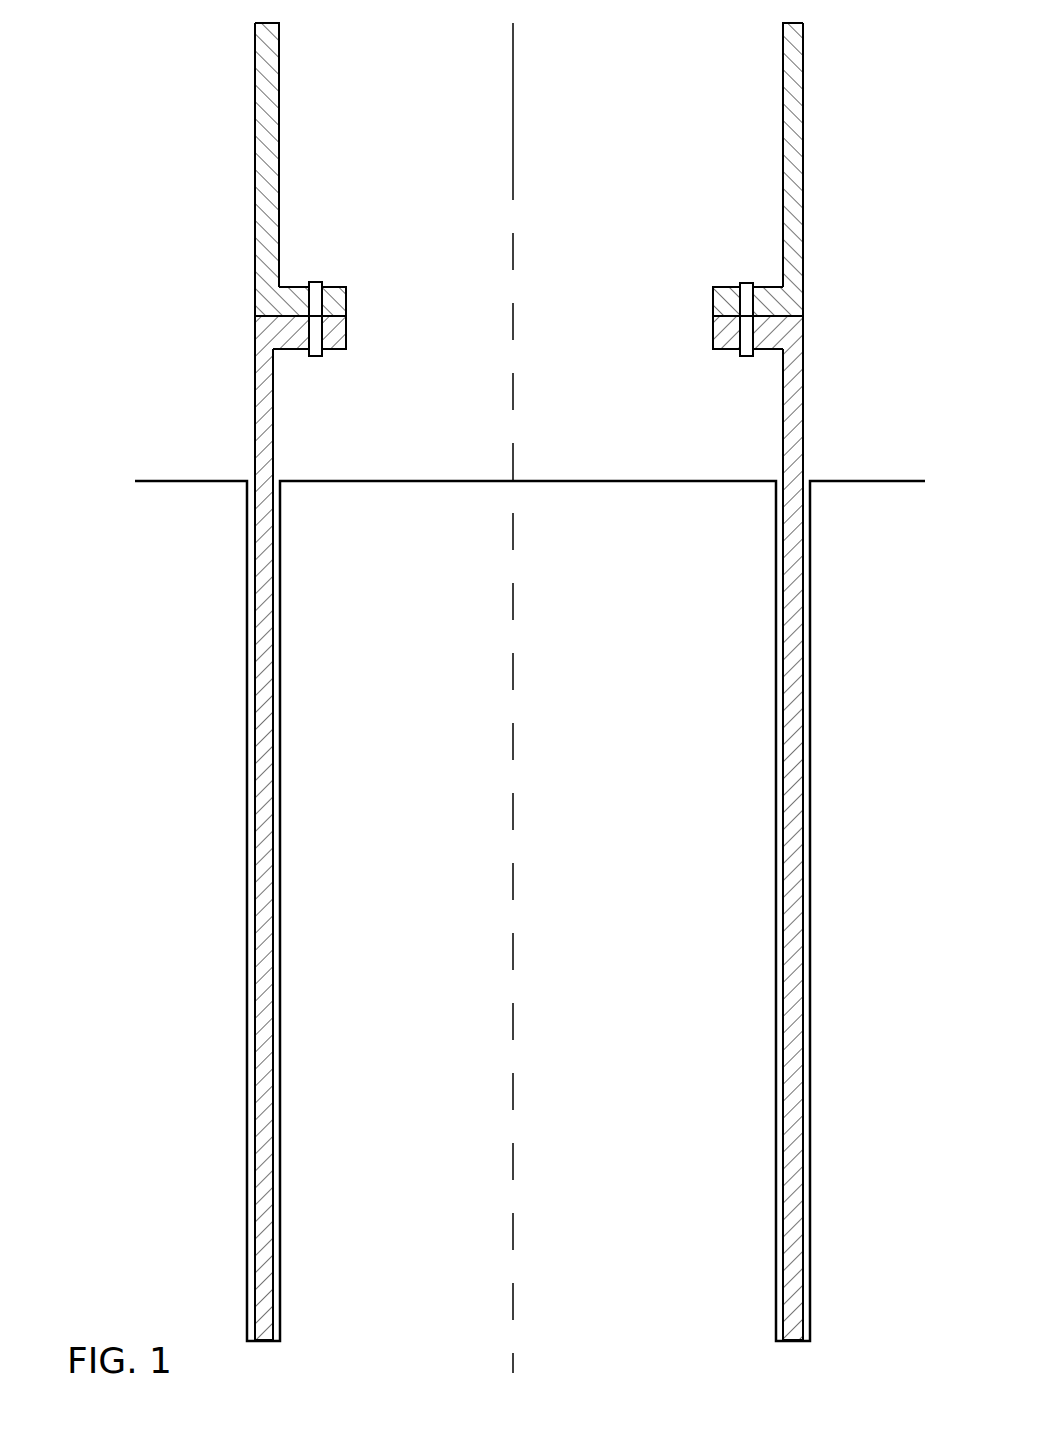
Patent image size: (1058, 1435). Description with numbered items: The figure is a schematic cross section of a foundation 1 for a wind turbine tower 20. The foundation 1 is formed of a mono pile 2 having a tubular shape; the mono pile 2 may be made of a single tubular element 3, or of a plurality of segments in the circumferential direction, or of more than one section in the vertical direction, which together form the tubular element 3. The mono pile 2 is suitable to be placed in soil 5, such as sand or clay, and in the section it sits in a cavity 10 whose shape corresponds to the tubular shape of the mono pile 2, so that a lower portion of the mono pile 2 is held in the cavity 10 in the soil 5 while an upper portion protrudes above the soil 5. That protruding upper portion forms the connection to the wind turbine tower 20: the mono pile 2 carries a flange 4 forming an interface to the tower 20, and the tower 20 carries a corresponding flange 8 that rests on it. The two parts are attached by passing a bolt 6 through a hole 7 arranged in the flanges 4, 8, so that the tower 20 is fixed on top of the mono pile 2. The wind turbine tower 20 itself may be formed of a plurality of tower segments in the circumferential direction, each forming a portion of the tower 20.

The foundation 1 is at (212, 312).
The mono pile 2 is at (258, 802).
The tubular element 3 is at (262, 985).
The flange 4 is at (337, 337).
The soil 5 is at (157, 578).
The bolt 6 is at (318, 286).
The hole 7 is at (322, 341).
The flange 8 is at (290, 288).
The cavity 10 is at (275, 598).
The wind turbine tower 20 is at (277, 170).